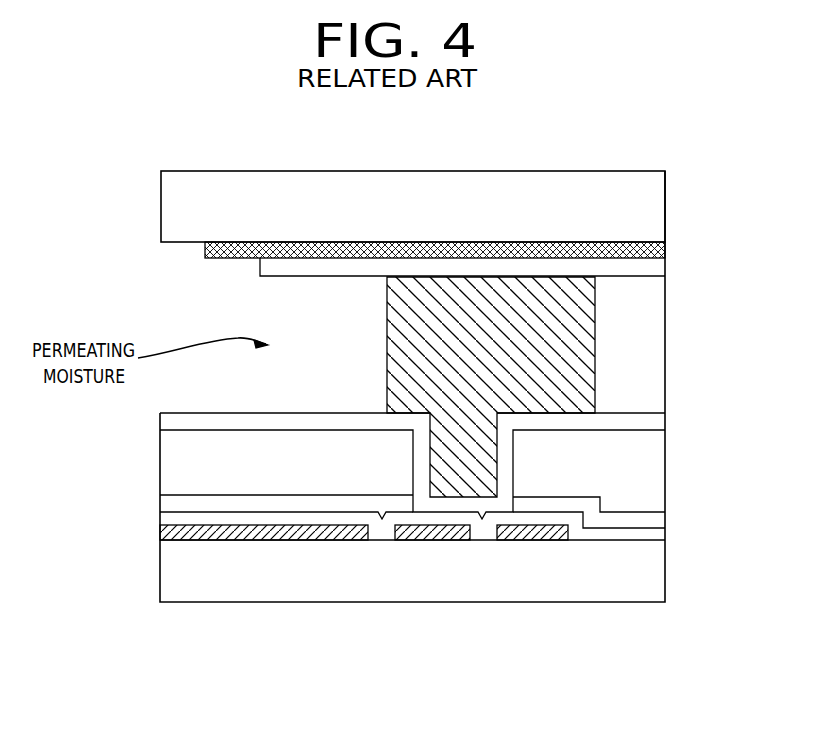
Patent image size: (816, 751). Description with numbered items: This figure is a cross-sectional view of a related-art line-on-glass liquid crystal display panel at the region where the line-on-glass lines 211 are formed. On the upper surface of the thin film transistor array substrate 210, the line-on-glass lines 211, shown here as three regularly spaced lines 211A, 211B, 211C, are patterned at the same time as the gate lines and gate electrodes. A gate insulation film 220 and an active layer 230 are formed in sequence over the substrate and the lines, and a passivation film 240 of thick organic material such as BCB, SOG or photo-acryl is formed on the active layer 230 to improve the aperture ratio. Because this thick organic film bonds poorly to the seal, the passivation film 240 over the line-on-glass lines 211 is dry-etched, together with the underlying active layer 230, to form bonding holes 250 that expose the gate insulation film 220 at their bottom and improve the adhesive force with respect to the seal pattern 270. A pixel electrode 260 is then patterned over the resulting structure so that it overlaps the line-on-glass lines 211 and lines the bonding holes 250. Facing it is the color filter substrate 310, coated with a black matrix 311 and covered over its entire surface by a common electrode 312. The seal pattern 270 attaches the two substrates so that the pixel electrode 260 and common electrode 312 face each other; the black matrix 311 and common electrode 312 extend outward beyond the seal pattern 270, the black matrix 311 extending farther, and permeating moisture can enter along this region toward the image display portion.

The color filter substrate 310 is at (657, 201).
The black matrix 311 is at (666, 250).
The common electrode 312 is at (657, 271).
The seal pattern 270 is at (580, 342).
The pixel electrode 260 is at (655, 425).
The bonding holes 250 is at (453, 459).
The passivation film 240 is at (655, 462).
The active layer 230 is at (655, 518).
The gate insulation film 220 is at (655, 537).
The thin film transistor array substrate 210 is at (655, 587).
The line-on-glass lines 211 is at (364, 616).
The line-on-glass line 211A is at (332, 541).
The line-on-glass line 211B is at (433, 541).
The line-on-glass line 211C is at (532, 591).